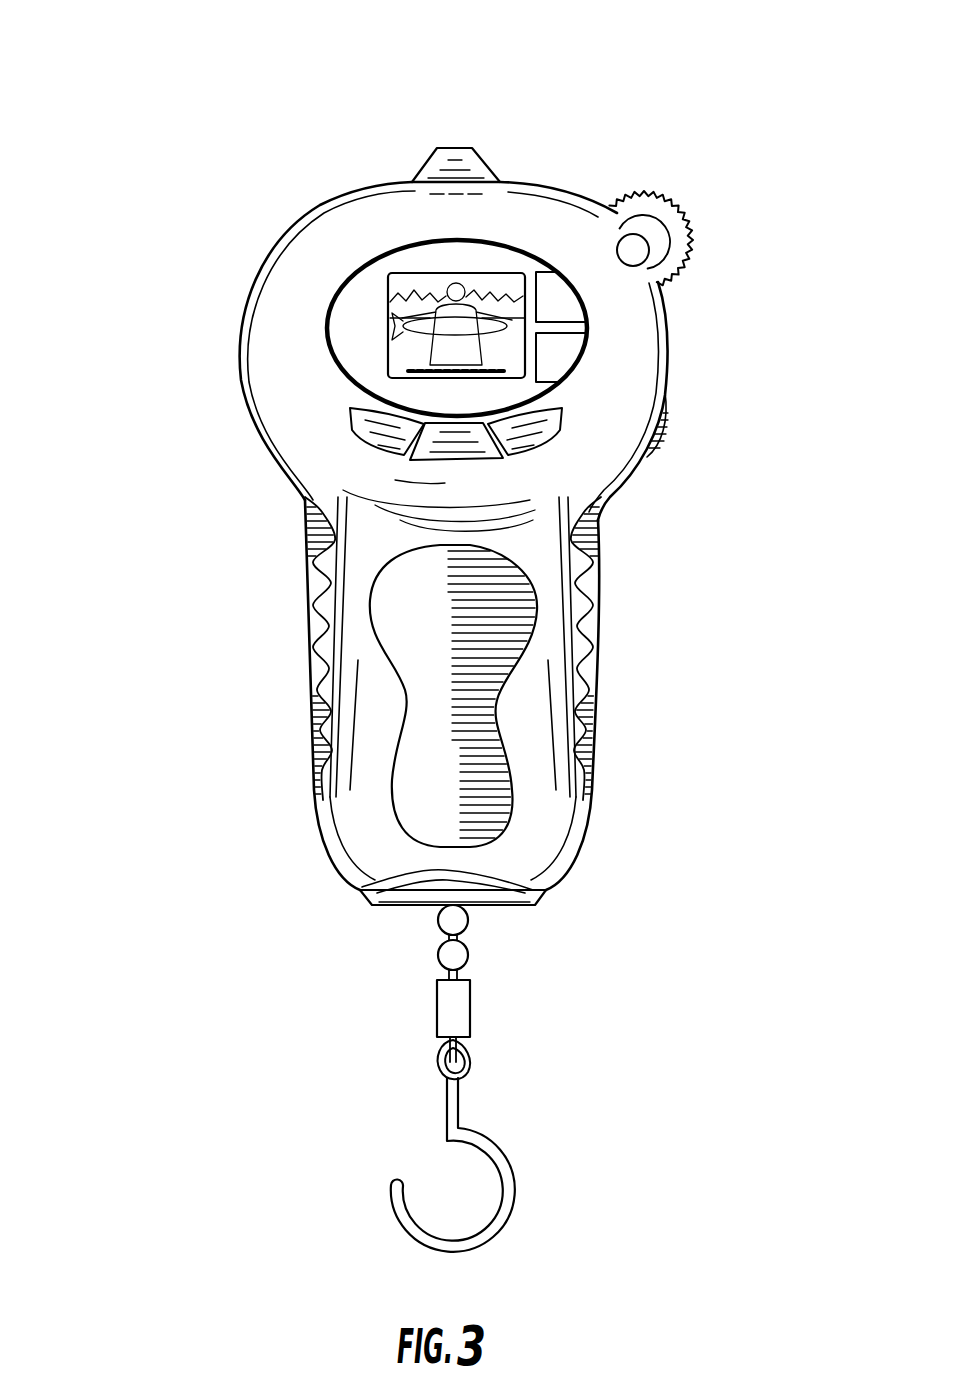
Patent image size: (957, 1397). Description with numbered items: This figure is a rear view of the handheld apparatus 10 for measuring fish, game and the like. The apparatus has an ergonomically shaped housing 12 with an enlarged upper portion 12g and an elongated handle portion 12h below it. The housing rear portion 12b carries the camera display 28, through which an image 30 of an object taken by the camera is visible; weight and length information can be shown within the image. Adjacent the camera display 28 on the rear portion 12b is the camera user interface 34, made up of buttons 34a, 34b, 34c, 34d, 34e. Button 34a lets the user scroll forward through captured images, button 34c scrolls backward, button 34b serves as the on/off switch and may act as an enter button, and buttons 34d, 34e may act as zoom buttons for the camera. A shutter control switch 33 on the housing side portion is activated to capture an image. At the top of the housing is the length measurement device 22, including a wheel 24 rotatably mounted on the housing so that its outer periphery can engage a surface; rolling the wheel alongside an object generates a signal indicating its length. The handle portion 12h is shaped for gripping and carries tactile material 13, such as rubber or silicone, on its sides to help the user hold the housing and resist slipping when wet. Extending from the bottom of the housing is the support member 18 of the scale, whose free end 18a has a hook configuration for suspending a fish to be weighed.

The handheld apparatus 10 is at (625, 98).
The housing 12 is at (297, 210).
The upper portion 12g is at (260, 343).
The housing rear portion 12b is at (630, 397).
The handle portion 12h is at (333, 818).
The tactile material 13 is at (306, 750).
The support member 18 is at (473, 1028).
The free end 18a is at (483, 1248).
The length measurement device 22 is at (678, 186).
The wheel 24 is at (700, 247).
The camera display 28 is at (475, 258).
The image 30 is at (412, 277).
The shutter control switch 33 is at (662, 437).
The camera user interface 34 is at (336, 398).
The button 34a is at (357, 437).
The button 34b is at (458, 453).
The button 34c is at (512, 433).
The button 34d is at (548, 350).
The button 34e is at (558, 292).